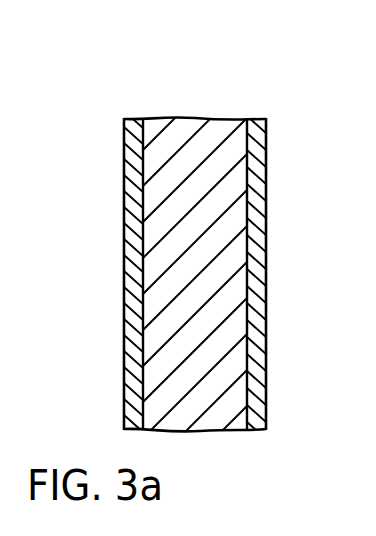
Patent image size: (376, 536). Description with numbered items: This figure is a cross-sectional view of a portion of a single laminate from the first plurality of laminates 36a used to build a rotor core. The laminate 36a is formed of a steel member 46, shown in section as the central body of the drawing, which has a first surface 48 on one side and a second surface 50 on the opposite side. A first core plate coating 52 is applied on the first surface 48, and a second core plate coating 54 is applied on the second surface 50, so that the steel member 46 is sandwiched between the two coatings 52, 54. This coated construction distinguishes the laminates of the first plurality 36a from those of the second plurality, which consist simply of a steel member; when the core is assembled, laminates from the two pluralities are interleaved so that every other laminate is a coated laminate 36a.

The first plurality of laminates 36a is at (195, 84).
The steel member 46 is at (188, 238).
The first surface 48 is at (140, 302).
The second surface 50 is at (254, 247).
The first core plate coating 52 is at (124, 355).
The second core plate coating 54 is at (267, 353).